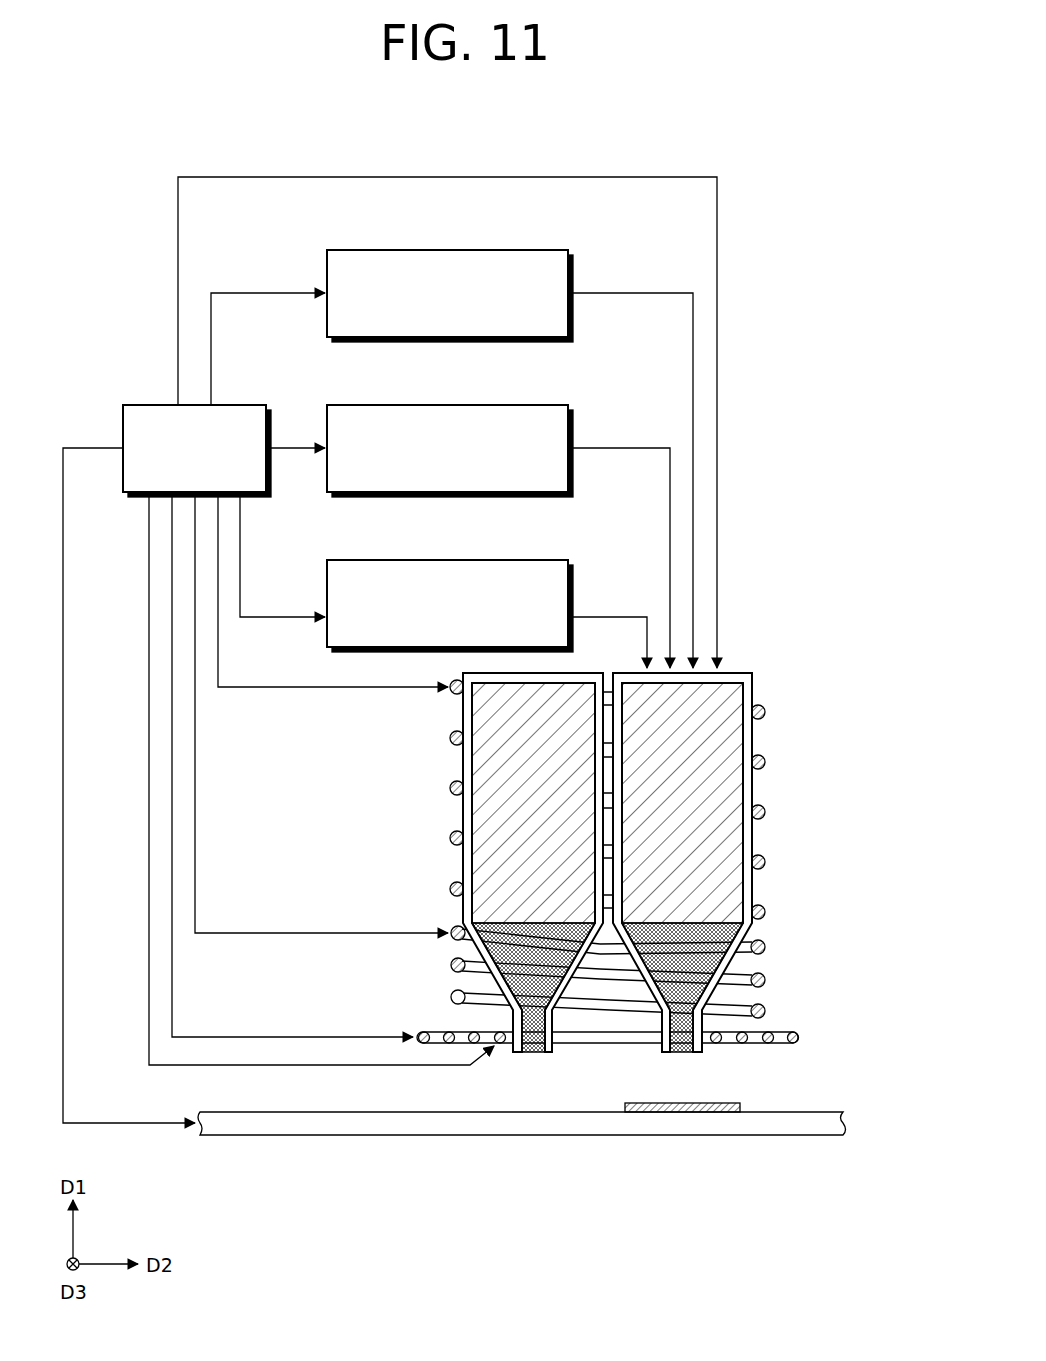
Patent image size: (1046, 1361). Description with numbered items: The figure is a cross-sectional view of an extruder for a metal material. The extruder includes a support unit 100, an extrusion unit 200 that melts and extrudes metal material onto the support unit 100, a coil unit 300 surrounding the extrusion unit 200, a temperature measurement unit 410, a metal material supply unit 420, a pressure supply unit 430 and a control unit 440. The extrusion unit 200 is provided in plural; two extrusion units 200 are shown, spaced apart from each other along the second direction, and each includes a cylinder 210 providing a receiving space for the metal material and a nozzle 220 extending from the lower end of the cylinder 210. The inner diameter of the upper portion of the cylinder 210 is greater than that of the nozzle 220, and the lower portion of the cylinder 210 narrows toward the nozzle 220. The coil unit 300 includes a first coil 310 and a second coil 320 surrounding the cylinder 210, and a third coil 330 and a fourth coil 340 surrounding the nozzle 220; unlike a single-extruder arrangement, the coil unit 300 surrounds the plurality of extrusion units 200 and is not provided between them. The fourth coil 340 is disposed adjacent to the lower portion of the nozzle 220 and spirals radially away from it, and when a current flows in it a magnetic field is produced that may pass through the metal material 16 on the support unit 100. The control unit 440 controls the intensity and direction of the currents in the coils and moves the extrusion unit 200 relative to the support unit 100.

The control unit 440 is at (236, 405).
The pressure supply unit 430 is at (524, 250).
The metal material supply unit 420 is at (524, 405).
The temperature measurement unit 410 is at (524, 560).
The extrusion unit 200 is at (512, 862).
The cylinder 210 is at (463, 803).
The nozzle 220 is at (500, 1018).
The coil unit 300 is at (674, 876).
The first coil 310 is at (661, 799).
The second coil 320 is at (766, 947).
The third coil 330 is at (720, 1066).
The fourth coil 340 is at (745, 1032).
The support unit 100 is at (840, 1118).
The metal material 16 is at (675, 1112).